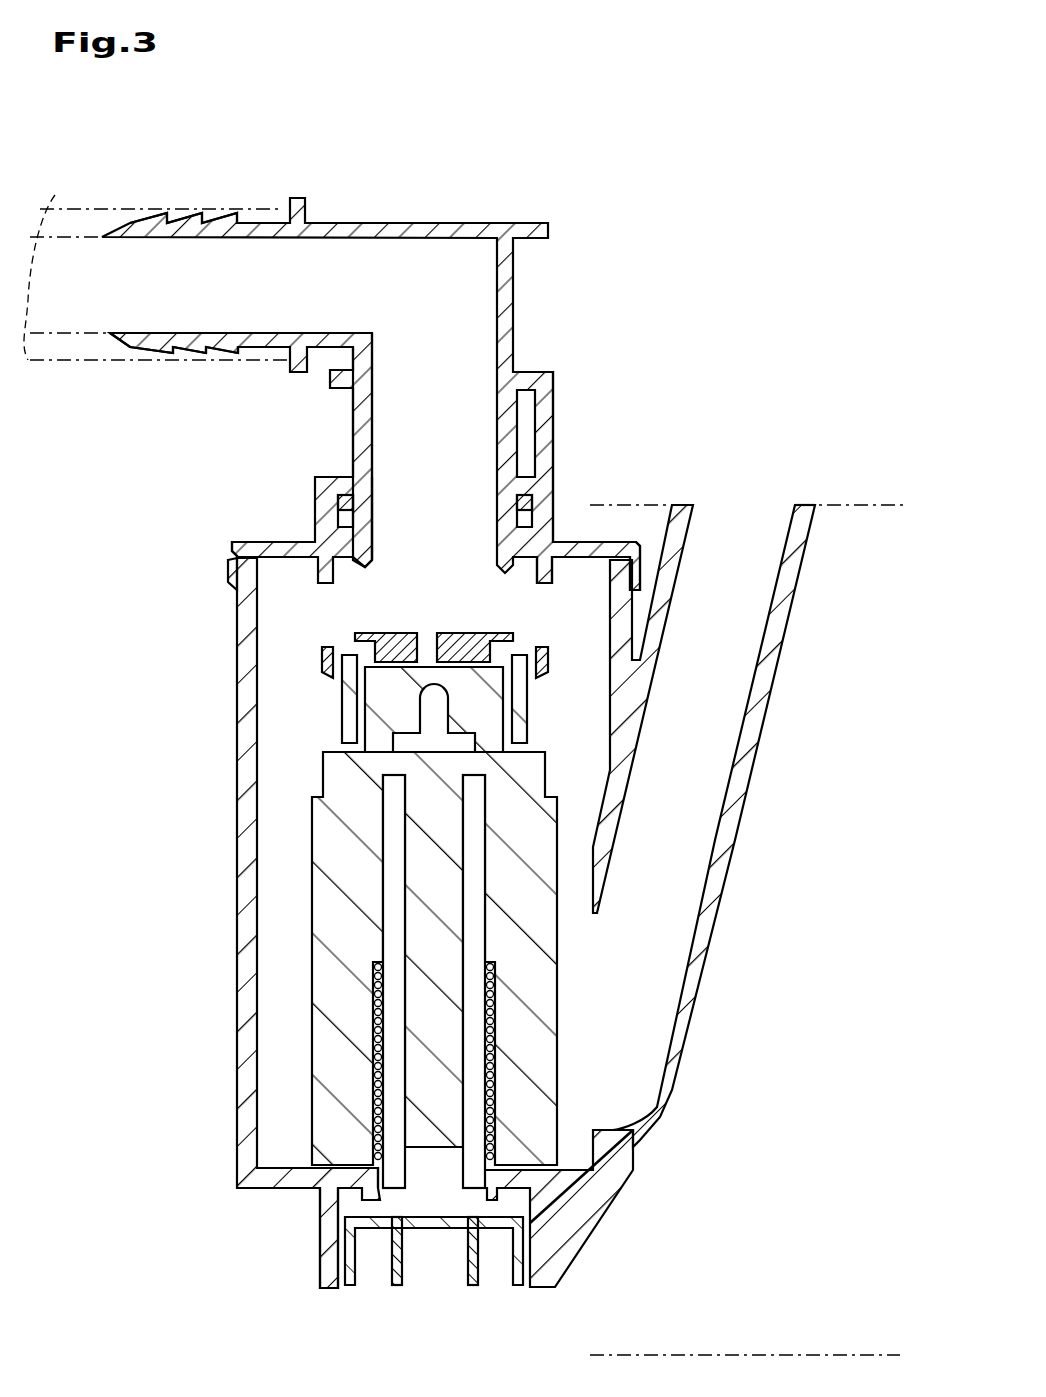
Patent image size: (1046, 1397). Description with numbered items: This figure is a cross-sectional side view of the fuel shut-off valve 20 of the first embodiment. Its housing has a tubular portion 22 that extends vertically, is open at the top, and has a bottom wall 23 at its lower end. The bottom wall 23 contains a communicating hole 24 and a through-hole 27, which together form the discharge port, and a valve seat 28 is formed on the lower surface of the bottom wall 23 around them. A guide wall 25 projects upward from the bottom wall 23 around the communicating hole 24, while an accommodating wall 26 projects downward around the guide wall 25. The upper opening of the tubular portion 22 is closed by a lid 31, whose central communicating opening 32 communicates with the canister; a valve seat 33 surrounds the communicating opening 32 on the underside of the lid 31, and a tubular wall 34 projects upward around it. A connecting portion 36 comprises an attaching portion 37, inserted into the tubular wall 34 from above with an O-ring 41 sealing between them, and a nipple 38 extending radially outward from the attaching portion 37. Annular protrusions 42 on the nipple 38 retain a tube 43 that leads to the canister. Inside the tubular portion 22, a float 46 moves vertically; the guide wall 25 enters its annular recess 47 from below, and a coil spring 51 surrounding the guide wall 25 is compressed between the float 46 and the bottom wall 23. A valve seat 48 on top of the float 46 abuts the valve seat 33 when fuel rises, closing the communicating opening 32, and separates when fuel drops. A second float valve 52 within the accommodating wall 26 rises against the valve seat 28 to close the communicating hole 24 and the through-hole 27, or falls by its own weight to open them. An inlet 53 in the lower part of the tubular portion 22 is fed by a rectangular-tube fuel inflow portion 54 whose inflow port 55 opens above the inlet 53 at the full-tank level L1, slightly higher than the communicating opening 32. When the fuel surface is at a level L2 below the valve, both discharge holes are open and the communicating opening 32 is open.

The fuel shut-off valve 20 is at (452, 883).
The tubular portion 22 is at (243, 782).
The bottom wall 23 is at (281, 1180).
The communicating hole 24 is at (462, 1158).
The guide wall 25 is at (495, 1080).
The accommodating wall 26 is at (325, 1258).
The through-hole 27 is at (400, 1195).
The valve seat 28 is at (490, 1193).
The lid 31 is at (283, 548).
The communicating opening 32 is at (372, 567).
The valve seat 33 is at (538, 583).
The tubular wall 34 is at (548, 410).
The connecting portion 36 is at (241, 446).
The attaching portion 37 is at (362, 436).
The nipple 38 is at (262, 342).
The O-ring 41 is at (345, 502).
The annular protrusions 42 is at (231, 210).
The tube 43 is at (52, 209).
The float 46 is at (540, 990).
The annular recess 47 is at (383, 905).
The valve seat 48 is at (470, 633).
The spring 51 is at (376, 1140).
The second float valve 52 is at (542, 1286).
The inlet 53 is at (596, 917).
The fuel inflow portion 54 is at (728, 858).
The inflow port 55 is at (812, 505).
The level L1 is at (605, 503).
The level L2 is at (820, 1352).